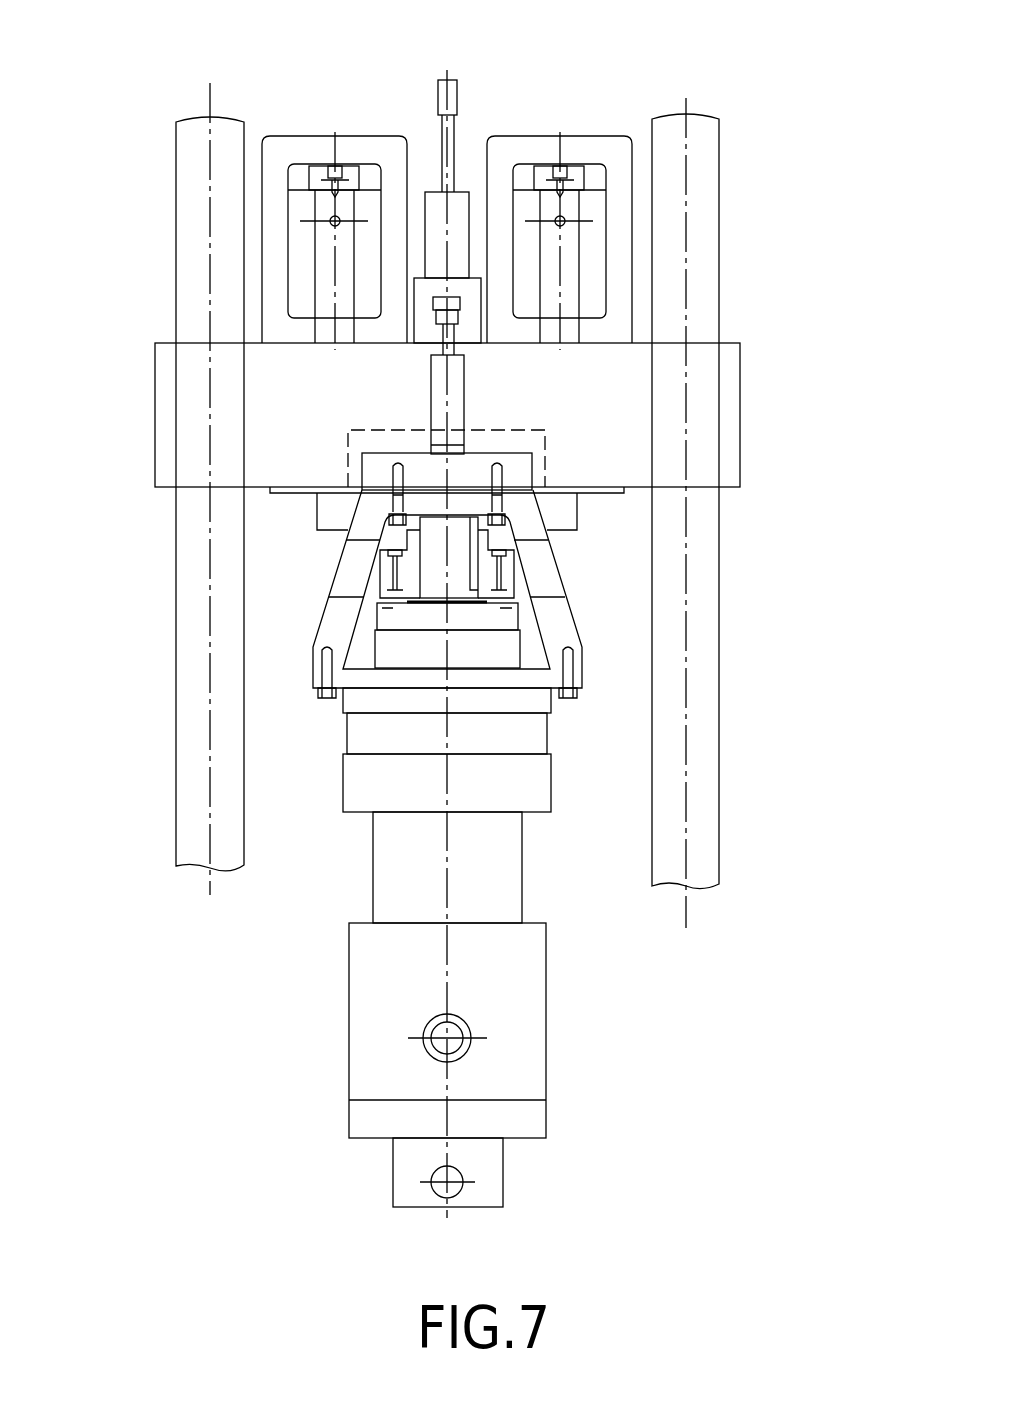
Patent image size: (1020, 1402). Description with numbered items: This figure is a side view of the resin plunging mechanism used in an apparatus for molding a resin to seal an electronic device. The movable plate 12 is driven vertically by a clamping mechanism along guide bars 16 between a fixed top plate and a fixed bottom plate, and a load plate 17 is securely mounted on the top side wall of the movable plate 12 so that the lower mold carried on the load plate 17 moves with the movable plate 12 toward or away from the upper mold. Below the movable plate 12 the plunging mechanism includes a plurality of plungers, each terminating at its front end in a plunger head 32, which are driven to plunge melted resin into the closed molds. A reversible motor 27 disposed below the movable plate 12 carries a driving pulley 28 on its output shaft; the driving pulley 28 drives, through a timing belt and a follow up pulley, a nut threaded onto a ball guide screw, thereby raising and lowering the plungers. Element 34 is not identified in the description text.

The movable plate 12 is at (172, 427).
The guide bar 16 is at (188, 283).
The load plate 17 is at (620, 265).
The reversible motor 27 is at (378, 787).
The driving pulley 28 is at (403, 575).
The plunger head 32 is at (453, 97).
The piston rod 34 is at (453, 140).